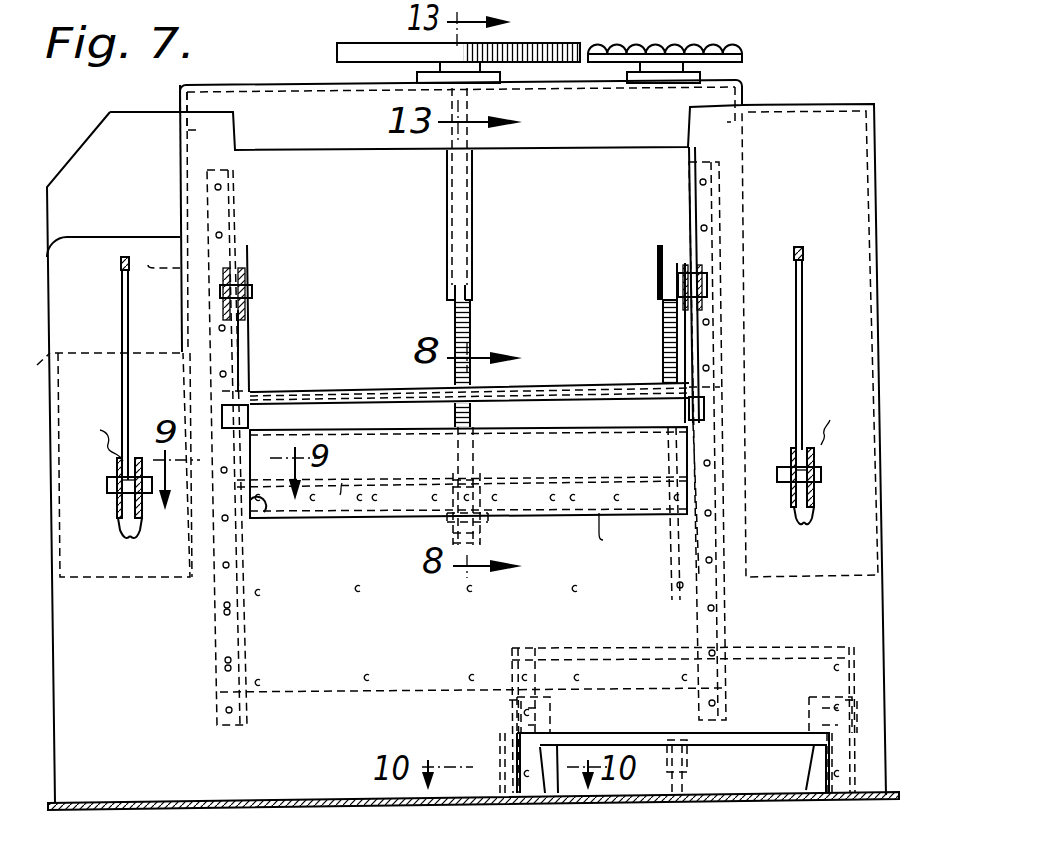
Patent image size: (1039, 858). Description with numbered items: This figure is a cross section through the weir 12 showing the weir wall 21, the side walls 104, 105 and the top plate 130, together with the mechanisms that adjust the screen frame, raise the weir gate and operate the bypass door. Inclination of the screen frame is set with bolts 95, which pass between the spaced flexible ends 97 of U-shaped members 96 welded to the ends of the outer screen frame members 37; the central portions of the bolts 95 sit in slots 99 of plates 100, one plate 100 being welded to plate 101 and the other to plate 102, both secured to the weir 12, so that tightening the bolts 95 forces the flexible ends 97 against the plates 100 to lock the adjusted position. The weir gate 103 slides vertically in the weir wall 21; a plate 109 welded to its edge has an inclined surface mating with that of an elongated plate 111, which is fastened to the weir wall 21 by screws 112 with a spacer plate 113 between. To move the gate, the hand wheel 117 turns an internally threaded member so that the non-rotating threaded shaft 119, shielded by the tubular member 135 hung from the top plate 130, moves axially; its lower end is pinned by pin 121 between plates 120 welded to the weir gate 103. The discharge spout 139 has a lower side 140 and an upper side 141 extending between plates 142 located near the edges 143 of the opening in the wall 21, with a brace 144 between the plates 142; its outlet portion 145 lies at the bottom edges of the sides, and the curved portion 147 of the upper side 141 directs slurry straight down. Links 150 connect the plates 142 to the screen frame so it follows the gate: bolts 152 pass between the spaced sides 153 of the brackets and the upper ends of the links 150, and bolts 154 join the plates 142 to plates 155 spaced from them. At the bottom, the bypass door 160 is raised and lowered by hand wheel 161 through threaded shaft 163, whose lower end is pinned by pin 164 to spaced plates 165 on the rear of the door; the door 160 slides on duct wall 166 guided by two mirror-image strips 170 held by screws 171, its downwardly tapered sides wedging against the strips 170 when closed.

The weir 12 is at (120, 110).
The weir wall 21 is at (242, 775).
The outer screen frame members 37 is at (455, 427).
The bolts 95 is at (108, 483).
The U-shaped members 96 is at (116, 466).
The flexible ends 97 is at (130, 522).
The slots 99 is at (122, 293).
The plates 100 is at (122, 269).
The plate 101 is at (93, 240).
The plate 102 is at (858, 171).
The weir gate 103 is at (302, 676).
The side wall 104 is at (744, 214).
The side wall 105 is at (155, 253).
The plate 109 is at (248, 625).
The elongated plate 111 is at (220, 605).
The screws 112 is at (222, 658).
The spacer plate 113 is at (222, 668).
The hand wheel 117 is at (345, 44).
The threaded shaft 119 is at (472, 316).
The plates 120 is at (450, 543).
The pin 121 is at (480, 537).
The top plate 130 is at (292, 85).
The tubular member 135 is at (447, 222).
The discharge spout 139 is at (544, 430).
The lower side 140 is at (536, 480).
The upper side 141 is at (422, 468).
The plates 142 is at (676, 451).
The edges 143 is at (252, 318).
The brace 144 is at (313, 386).
The outlet portion 145 is at (603, 545).
The curved portion 147 is at (349, 489).
The links 150 is at (250, 339).
The bolts 152 is at (251, 284).
The spaced sides 153 is at (251, 258).
The bolts 154 is at (254, 412).
The plates 155 is at (248, 393).
The bypass door 160 is at (783, 792).
The hand wheel 161 is at (716, 44).
The threaded shaft 163 is at (664, 334).
The pin 164 is at (679, 810).
The spaced plates 165 is at (655, 800).
The wall 166 is at (548, 716).
The strip 170 is at (545, 800).
The screws 171 is at (515, 715).